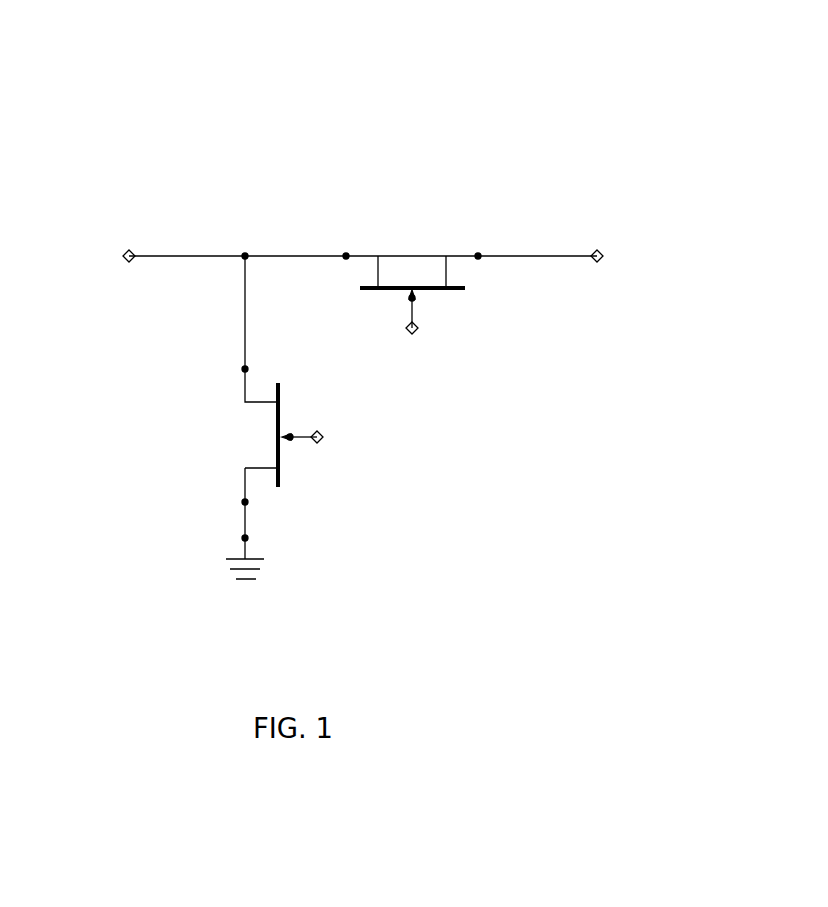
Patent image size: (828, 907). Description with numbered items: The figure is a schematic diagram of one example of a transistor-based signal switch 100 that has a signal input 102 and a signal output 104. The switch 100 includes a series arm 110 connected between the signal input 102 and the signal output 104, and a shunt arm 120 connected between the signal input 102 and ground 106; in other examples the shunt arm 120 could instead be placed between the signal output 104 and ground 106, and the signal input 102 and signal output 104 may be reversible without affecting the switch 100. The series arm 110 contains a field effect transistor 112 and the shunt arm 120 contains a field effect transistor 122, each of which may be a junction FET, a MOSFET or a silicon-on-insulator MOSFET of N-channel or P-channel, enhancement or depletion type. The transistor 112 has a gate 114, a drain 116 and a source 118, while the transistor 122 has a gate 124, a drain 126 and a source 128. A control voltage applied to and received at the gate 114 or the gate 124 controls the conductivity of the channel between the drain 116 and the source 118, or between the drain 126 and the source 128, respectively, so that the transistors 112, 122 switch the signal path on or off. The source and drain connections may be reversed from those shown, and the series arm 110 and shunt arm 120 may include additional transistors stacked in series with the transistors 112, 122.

The transistor-based signal switch 100 is at (517, 83).
The signal input 102 is at (130, 246).
The signal output 104 is at (597, 248).
The ground 106 is at (263, 576).
The series arm 110 is at (540, 190).
The field effect transistor 112 is at (477, 288).
The gate 114 is at (415, 334).
The drain 116 is at (360, 255).
The source 118 is at (478, 255).
The shunt arm 120 is at (182, 563).
The field effect transistor 122 is at (302, 495).
The gate 124 is at (319, 442).
The drain 126 is at (243, 501).
The source 128 is at (243, 369).